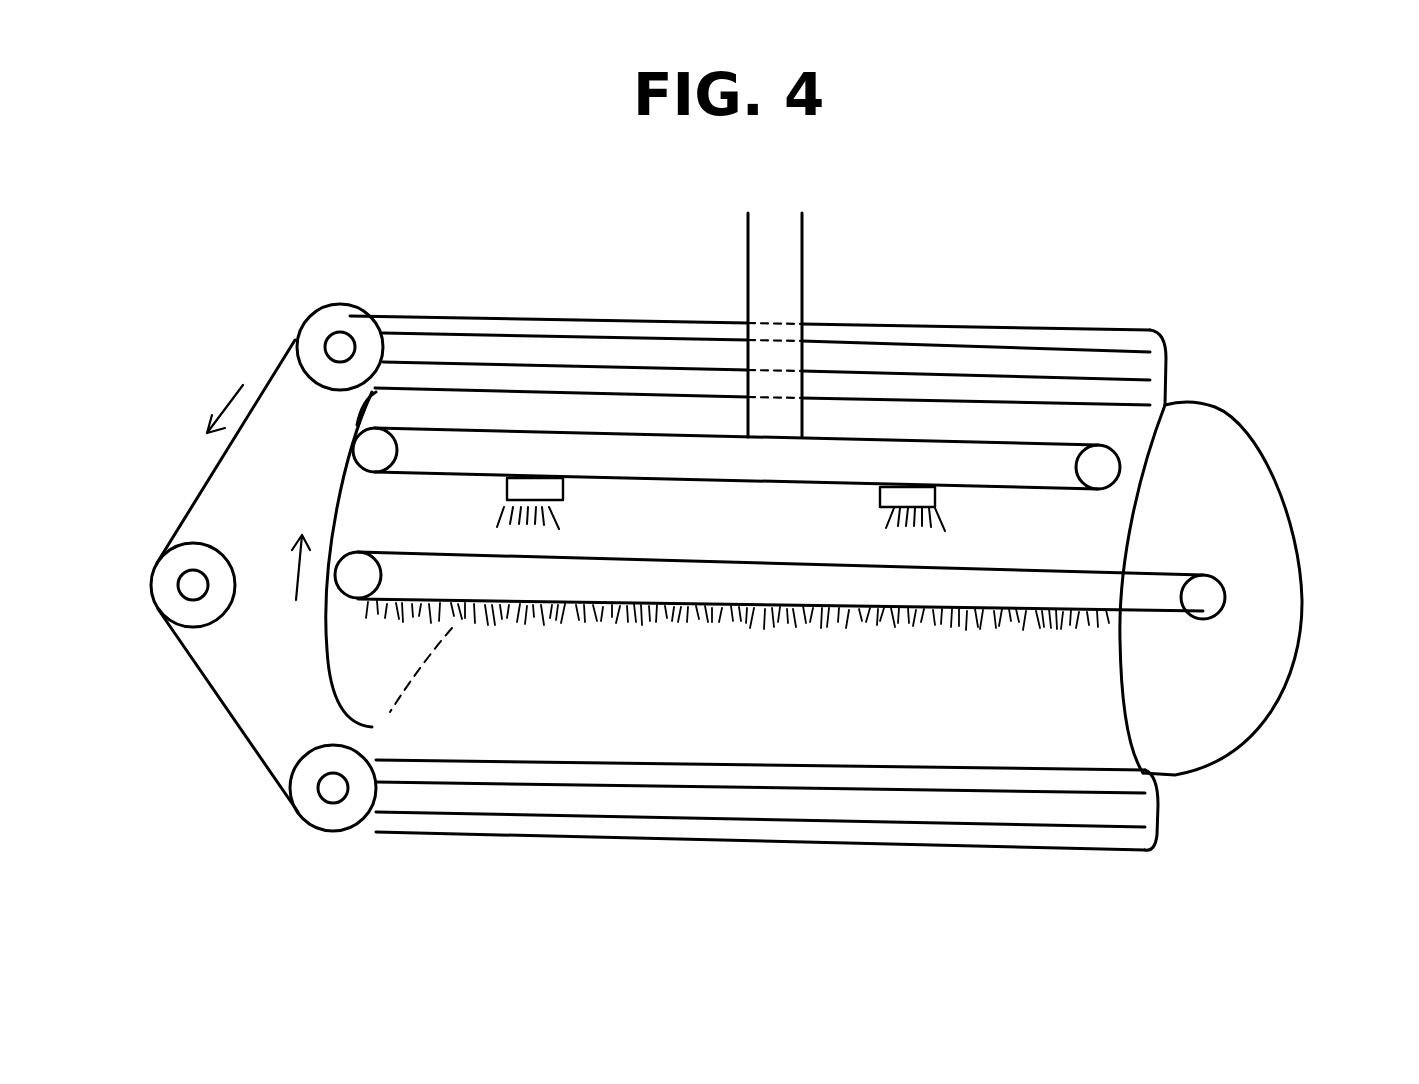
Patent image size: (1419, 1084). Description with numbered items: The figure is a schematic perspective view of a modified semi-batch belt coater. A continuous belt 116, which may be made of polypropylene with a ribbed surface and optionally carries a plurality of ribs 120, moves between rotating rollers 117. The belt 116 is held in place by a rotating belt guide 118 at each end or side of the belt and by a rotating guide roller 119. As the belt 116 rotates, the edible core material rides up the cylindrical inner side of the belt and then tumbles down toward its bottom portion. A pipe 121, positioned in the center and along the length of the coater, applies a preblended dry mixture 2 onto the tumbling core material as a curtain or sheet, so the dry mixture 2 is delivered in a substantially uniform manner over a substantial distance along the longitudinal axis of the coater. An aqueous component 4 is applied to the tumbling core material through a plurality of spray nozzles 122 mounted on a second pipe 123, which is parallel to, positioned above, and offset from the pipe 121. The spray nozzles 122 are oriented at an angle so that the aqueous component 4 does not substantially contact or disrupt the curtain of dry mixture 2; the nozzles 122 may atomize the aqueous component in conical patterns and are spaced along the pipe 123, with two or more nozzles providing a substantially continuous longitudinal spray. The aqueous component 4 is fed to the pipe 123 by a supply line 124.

The preblended dry mixture 2 is at (633, 620).
The aqueous component 4 is at (492, 518).
The continuous belt 116 is at (232, 730).
The rotating rollers 117 is at (337, 305).
The rotating belt guide 118 is at (1298, 510).
The rotating guide roller 119 is at (152, 585).
The ribs 120 is at (488, 362).
The pipe 121 is at (373, 600).
The spray nozzles 122 is at (565, 495).
The pipe 123 is at (1050, 457).
The supply line 124 is at (805, 258).